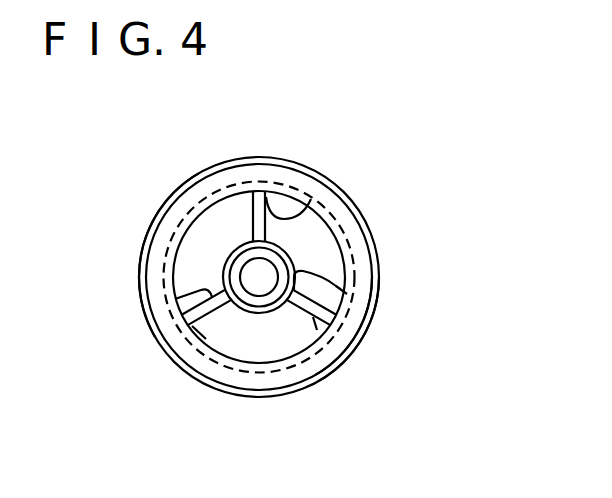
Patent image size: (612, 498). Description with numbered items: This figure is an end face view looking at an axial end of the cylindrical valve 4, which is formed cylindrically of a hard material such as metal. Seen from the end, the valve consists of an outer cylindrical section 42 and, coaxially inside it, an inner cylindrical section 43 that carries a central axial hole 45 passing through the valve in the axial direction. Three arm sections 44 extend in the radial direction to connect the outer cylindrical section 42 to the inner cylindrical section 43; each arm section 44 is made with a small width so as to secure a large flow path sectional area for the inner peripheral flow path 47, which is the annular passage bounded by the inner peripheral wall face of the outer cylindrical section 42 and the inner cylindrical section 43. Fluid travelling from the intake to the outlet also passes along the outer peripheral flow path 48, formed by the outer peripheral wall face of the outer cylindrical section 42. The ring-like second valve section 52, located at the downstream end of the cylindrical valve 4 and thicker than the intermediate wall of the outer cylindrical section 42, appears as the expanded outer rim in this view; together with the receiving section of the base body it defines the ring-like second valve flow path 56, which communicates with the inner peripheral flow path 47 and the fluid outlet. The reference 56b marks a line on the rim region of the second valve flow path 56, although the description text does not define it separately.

The cylindrical valve 4 is at (302, 150).
The outer cylindrical section 42 is at (353, 226).
The inner cylindrical section 43 is at (368, 318).
The arm section 44 is at (308, 197).
The axial hole 45 is at (259, 280).
The inner peripheral flow path 47 is at (217, 227).
The outer peripheral flow path 48 is at (137, 290).
The second valve section 52 is at (380, 302).
The second valve flow path 56 is at (353, 200).
The groove line on ring 56b is at (360, 194).